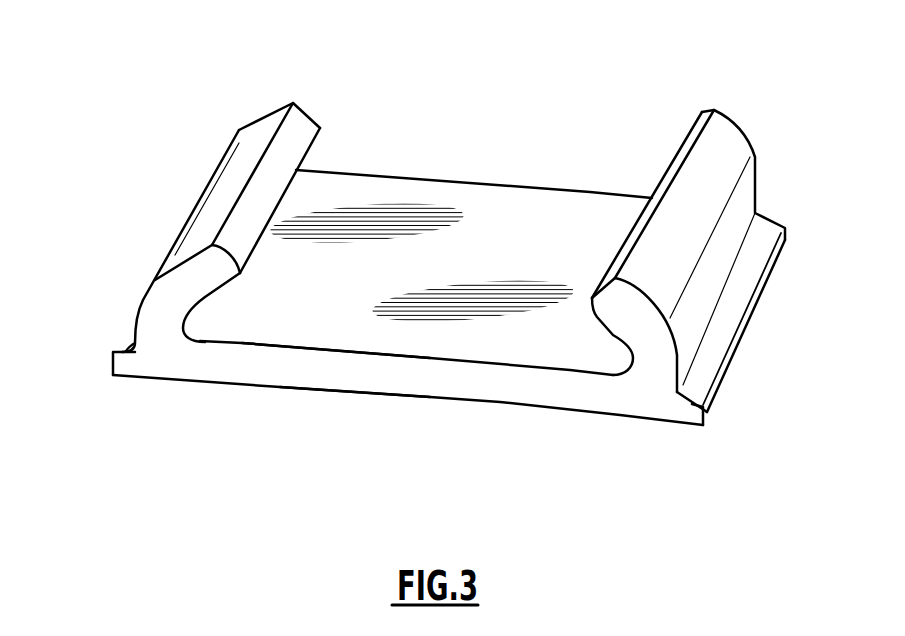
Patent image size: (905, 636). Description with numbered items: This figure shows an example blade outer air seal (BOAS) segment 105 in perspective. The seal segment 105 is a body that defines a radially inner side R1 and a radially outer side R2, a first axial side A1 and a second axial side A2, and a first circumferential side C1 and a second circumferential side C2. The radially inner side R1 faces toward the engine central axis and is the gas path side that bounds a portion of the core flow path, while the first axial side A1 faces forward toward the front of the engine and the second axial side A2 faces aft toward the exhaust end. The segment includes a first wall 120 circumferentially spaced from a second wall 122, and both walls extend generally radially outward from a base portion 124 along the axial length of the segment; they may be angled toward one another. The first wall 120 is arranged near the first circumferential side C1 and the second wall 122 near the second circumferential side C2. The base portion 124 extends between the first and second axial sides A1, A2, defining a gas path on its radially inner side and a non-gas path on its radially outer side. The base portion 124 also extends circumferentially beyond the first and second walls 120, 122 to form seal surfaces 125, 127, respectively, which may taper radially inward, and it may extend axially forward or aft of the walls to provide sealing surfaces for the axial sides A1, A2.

The BOAS segment 105 is at (751, 66).
The first wall 120 is at (655, 283).
The second wall 122 is at (200, 260).
The base portion 124 is at (452, 202).
The seal surface 125 is at (692, 404).
The seal surface 127 is at (122, 343).
The first axial side A1 is at (575, 398).
The second axial side A2 is at (575, 190).
The radially inner side R1 is at (333, 388).
The radially outer side R2 is at (323, 332).
The first circumferential side C1 is at (722, 383).
The second circumferential side C2 is at (123, 340).